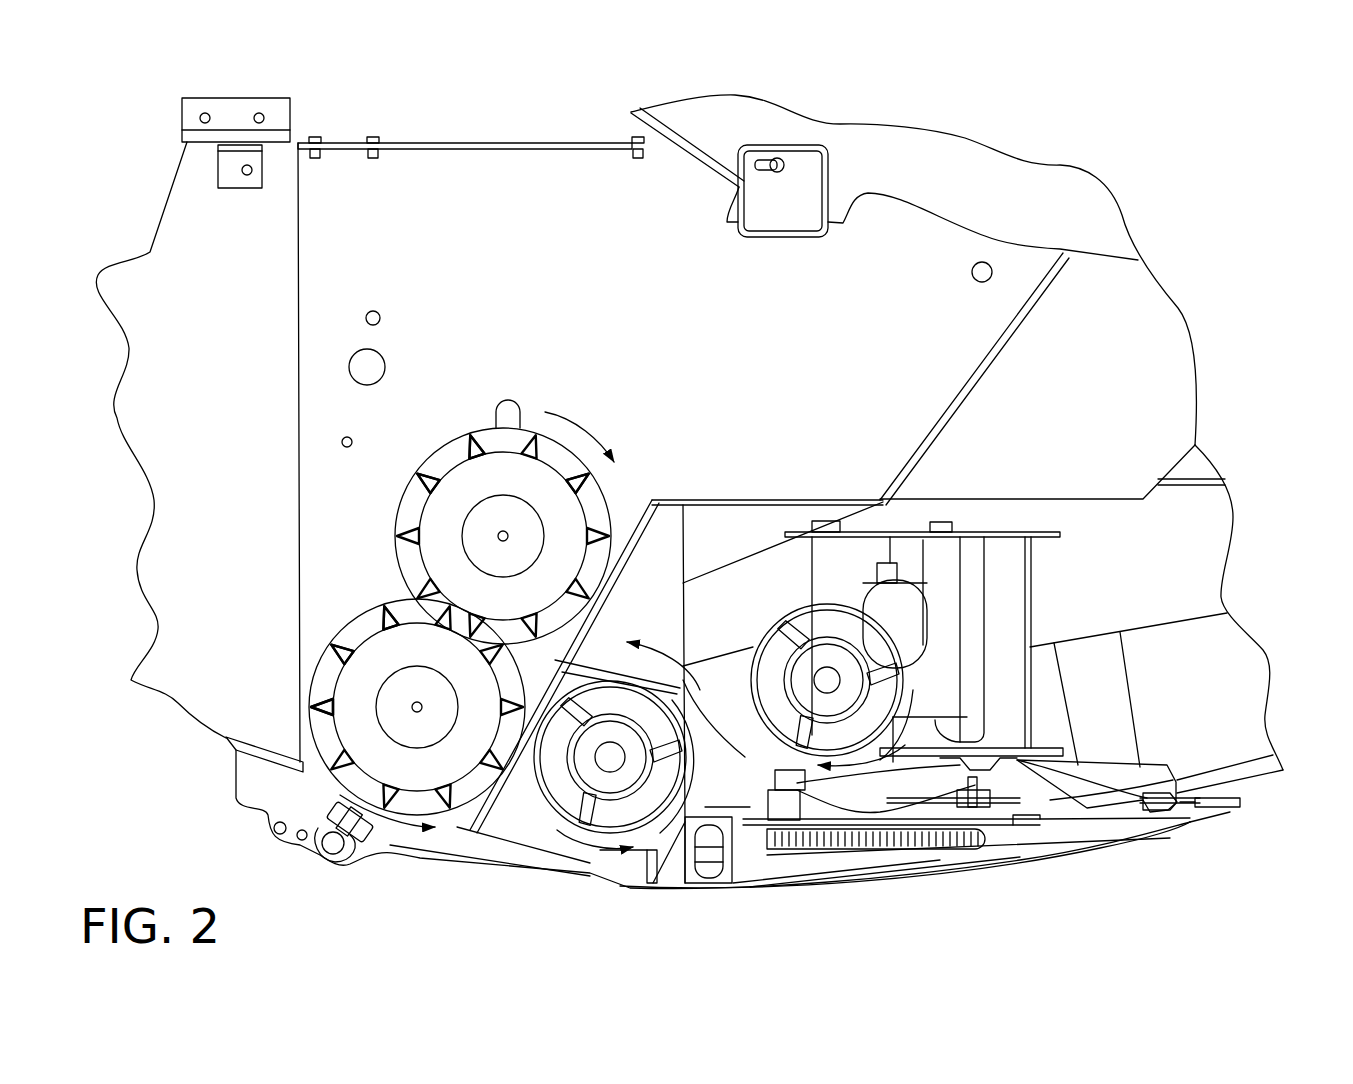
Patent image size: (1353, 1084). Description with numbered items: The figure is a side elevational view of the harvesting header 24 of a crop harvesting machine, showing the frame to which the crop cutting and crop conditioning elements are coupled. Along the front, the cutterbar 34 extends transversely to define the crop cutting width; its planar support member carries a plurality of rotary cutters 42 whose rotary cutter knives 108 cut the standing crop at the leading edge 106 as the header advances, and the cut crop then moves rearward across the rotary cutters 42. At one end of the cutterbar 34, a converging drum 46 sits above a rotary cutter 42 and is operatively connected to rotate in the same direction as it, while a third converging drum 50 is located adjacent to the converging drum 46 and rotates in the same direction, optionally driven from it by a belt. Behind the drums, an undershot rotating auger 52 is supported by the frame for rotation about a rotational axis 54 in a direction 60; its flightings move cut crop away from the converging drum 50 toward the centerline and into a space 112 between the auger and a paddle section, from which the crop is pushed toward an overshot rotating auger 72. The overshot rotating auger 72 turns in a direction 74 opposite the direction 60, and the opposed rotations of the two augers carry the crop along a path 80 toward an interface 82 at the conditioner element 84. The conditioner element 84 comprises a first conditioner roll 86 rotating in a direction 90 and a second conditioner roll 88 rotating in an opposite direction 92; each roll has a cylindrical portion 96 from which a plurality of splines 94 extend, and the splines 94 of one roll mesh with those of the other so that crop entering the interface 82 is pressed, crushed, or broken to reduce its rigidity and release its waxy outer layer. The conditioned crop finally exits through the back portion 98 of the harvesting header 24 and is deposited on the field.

The harvesting header 24 is at (508, 117).
The back portion 98 is at (222, 507).
The first conditioner roll 86 is at (305, 785).
The direction 90 is at (390, 828).
The second conditioner roll 88 is at (363, 502).
The conditioner element 84 is at (356, 568).
The splines 94 is at (492, 448).
The cylindrical portion 96 is at (590, 507).
The direction 92 is at (578, 423).
The overshot rotating auger 72 is at (546, 826).
The interface 82 is at (541, 665).
The direction 74 is at (590, 849).
The path 80 is at (647, 638).
The undershot rotating auger 52 is at (768, 610).
The rotational axis 54 is at (826, 672).
The third converging drum 50 is at (922, 538).
The converging drum 46 is at (1026, 589).
The rotary cutters 42 is at (1097, 767).
The rotary cutter knives 108 is at (1220, 798).
The direction 60 is at (860, 757).
The space 112 is at (772, 760).
The cutterbar 34 is at (1073, 848).
The leading edge 106 is at (1212, 812).